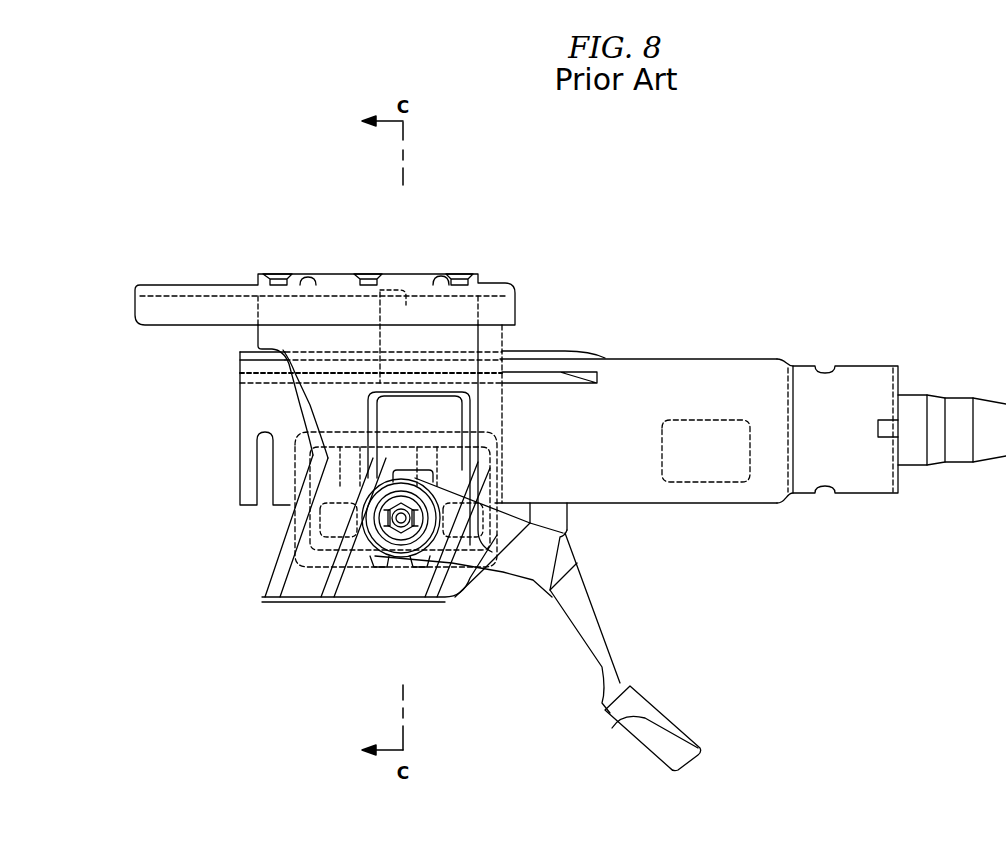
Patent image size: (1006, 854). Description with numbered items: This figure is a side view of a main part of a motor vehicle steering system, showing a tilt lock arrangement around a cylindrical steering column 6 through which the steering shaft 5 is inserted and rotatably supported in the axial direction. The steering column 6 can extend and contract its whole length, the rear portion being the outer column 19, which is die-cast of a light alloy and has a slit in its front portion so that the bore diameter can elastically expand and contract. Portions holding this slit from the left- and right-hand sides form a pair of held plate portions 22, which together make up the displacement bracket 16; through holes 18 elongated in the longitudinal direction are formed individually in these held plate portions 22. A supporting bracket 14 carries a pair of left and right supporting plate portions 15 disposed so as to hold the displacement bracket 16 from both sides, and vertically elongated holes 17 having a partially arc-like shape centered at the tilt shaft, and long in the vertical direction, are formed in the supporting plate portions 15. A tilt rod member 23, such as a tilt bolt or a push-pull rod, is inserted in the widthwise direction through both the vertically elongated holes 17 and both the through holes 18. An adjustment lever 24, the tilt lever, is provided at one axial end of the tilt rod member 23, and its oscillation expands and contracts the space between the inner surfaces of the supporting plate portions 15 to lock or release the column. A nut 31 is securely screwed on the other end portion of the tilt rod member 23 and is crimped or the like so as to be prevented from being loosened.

The steering shaft 5 is at (962, 405).
The steering column 6 is at (763, 342).
The supporting bracket 14 is at (393, 335).
The supporting plate portions 15 is at (318, 397).
The displacement bracket 16 is at (300, 560).
The vertically elongated holes 17 is at (377, 572).
The through holes 18 is at (330, 567).
The outer column 19 is at (665, 365).
The held plate portions 22 is at (310, 546).
The tilt rod member 23 is at (437, 567).
The adjustment lever 24 is at (573, 596).
The nut 31 is at (388, 560).